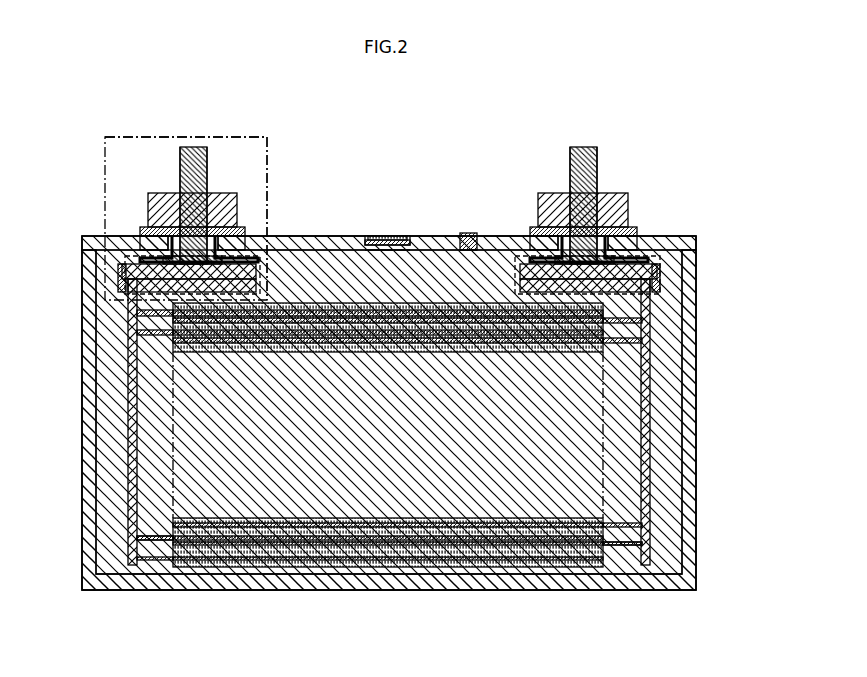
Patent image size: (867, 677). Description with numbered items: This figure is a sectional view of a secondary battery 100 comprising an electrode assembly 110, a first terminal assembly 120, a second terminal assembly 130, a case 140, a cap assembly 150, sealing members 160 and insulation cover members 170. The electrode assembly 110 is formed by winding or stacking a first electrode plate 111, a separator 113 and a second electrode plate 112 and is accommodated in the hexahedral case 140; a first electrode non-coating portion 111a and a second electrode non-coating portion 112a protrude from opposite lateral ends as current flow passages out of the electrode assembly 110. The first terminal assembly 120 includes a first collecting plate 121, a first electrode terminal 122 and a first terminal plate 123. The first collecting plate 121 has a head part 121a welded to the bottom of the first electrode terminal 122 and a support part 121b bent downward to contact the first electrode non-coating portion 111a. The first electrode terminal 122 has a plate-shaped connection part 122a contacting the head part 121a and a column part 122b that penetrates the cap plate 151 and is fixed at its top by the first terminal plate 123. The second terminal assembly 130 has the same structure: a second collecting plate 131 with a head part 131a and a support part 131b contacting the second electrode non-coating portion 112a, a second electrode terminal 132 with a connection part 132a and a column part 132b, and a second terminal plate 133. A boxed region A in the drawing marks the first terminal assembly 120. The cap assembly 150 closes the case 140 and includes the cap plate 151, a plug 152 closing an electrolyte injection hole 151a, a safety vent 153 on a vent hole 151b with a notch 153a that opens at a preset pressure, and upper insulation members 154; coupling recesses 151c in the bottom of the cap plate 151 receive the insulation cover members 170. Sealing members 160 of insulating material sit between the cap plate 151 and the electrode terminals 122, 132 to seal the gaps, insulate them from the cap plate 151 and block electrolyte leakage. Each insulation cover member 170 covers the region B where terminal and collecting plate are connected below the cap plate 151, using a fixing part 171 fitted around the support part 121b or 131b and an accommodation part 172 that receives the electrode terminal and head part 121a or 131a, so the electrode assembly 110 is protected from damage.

The secondary battery 100 is at (692, 83).
The electrode assembly 110 is at (391, 474).
The first electrode plate 111 is at (272, 568).
The first electrode non-coating portion 111a is at (157, 562).
The second electrode plate 112 is at (535, 568).
The second electrode non-coating portion 112a is at (622, 562).
The separator 113 is at (405, 545).
The first terminal assembly 120 is at (386, 330).
The first collecting plate 121 is at (132, 422).
The head part 121a is at (128, 288).
The support part 121b is at (128, 340).
The first electrode terminal 122 is at (208, 152).
The connection part 122a is at (232, 250).
The column part 122b is at (206, 182).
The first terminal plate 123 is at (141, 194).
The second terminal assembly 130 is at (633, 323).
The second collecting plate 131 is at (645, 422).
The head part 131a is at (650, 288).
The support part 131b is at (650, 340).
The second electrode terminal 132 is at (568, 152).
The connection part 132a is at (546, 248).
The second terminal post 132b is at (597, 182).
The second terminal plate 133 is at (632, 195).
The case 140 is at (690, 400).
The cap assembly 150 is at (455, 158).
The cap plate 151 is at (312, 236).
The electrolyte injection hole 151a is at (466, 251).
The vent hole 151b is at (388, 251).
The coupling recess 151c is at (135, 247).
The plug 152 is at (468, 234).
The safety vent 153 is at (405, 241).
The notch 153a is at (379, 237).
The upper insulation member 154 is at (144, 232).
The sealing member 160 is at (259, 262).
The insulation cover member 170 is at (256, 281).
The fixing part 171 is at (120, 272).
The accommodation part 172 is at (140, 313).
The region A is at (263, 137).
The region B is at (262, 282).